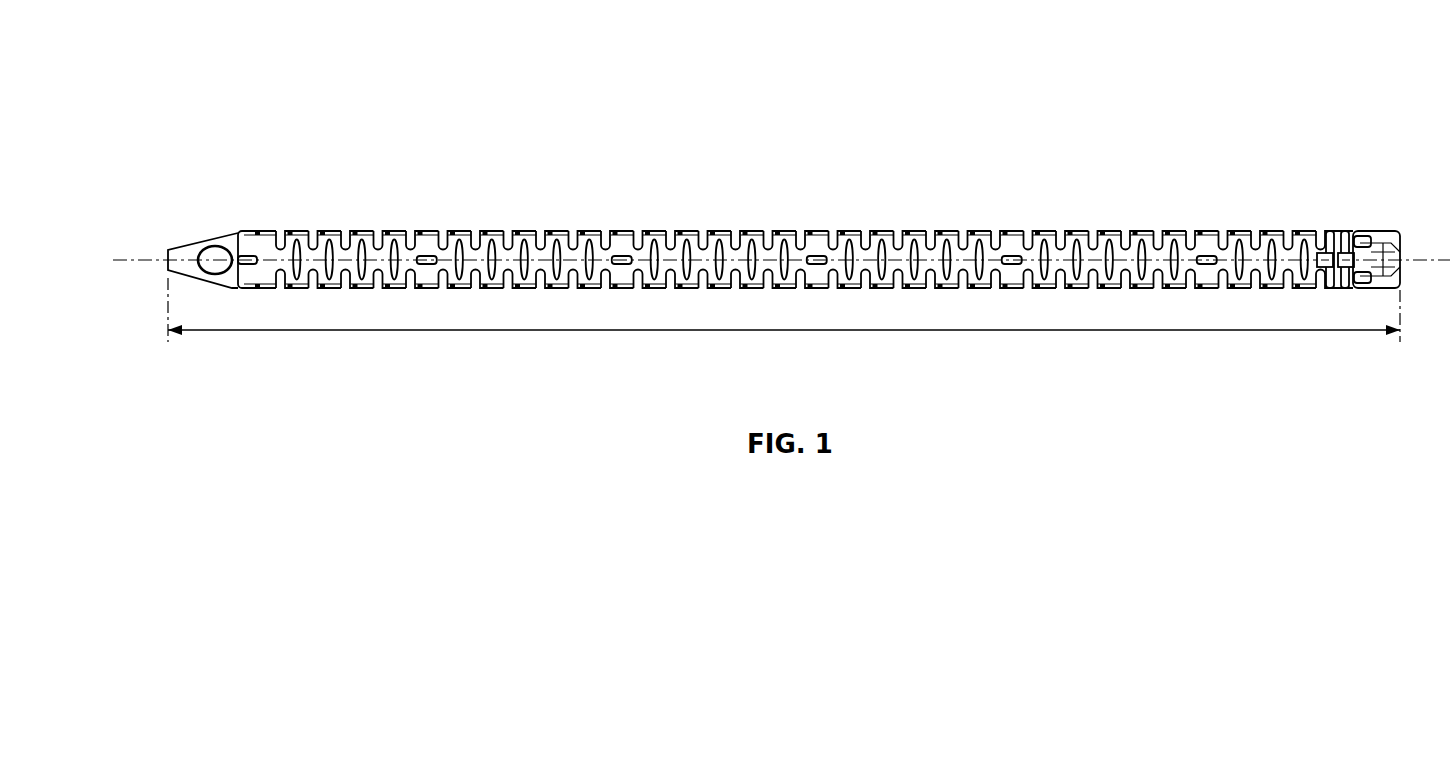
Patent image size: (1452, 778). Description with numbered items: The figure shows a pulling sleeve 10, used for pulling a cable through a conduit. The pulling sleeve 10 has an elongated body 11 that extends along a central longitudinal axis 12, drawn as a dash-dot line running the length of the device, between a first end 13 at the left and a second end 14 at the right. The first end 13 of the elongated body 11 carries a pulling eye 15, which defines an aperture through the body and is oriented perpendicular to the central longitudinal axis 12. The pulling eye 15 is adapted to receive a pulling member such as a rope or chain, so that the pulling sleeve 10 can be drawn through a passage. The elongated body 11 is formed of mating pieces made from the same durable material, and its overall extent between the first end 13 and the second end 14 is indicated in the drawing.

The pulling sleeve 10 is at (207, 90).
The elongated body 11 is at (720, 333).
The central longitudinal axis 12 is at (148, 262).
The first end 13 is at (194, 230).
The second end 14 is at (1328, 226).
The pulling eye 15 is at (214, 254).